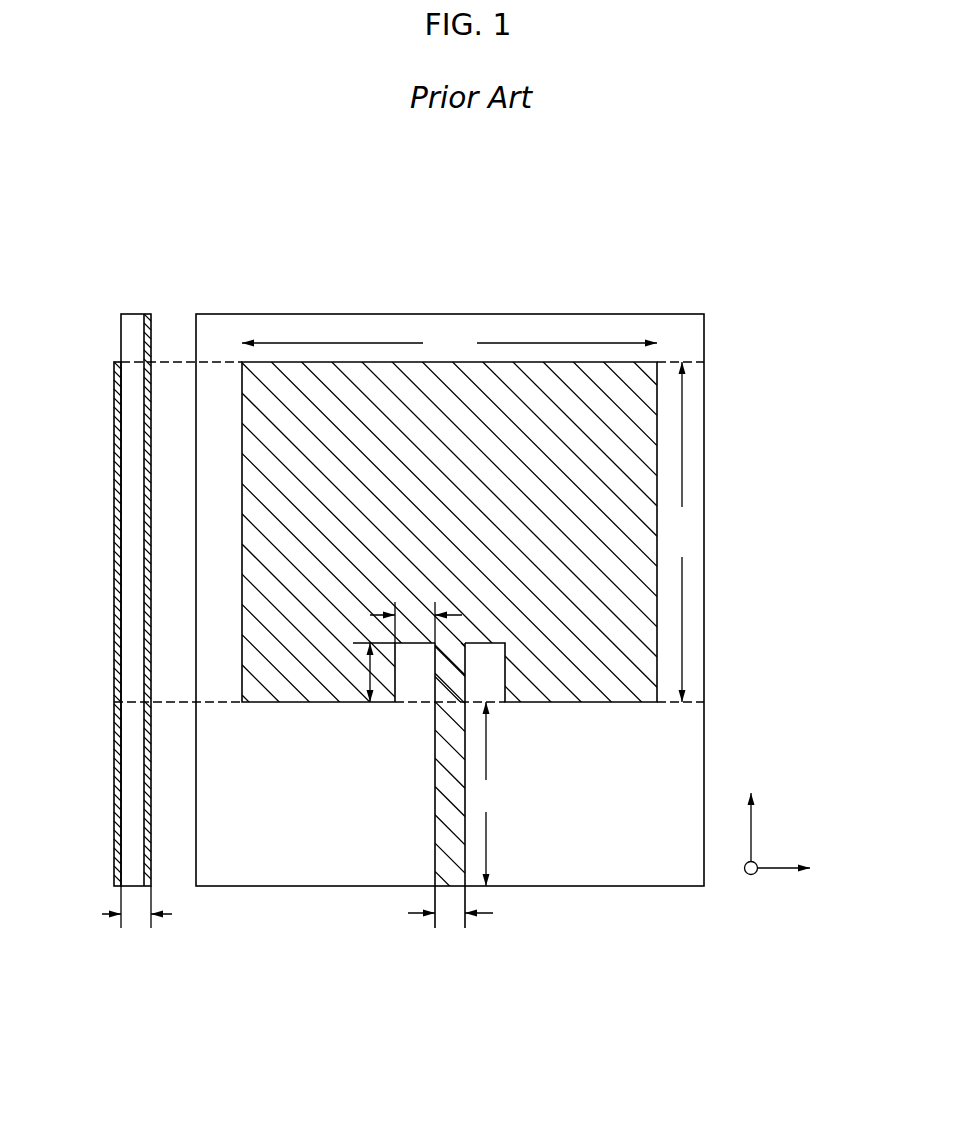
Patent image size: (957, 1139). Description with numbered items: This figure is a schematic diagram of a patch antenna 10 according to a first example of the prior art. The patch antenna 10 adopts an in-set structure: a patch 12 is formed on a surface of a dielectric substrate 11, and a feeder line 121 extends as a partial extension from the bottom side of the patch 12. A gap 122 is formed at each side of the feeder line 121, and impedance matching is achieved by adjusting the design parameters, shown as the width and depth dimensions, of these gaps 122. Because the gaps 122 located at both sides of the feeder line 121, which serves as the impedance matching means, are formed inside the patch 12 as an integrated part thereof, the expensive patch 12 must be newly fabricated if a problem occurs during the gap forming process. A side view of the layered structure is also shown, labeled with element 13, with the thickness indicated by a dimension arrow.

The patch antenna 10 is at (473, 203).
The dielectric substrate 11 is at (693, 443).
The patch 12 is at (647, 626).
The feeder line 121 is at (444, 834).
The gap 122 is at (411, 676).
The ground plane 13 is at (150, 340).